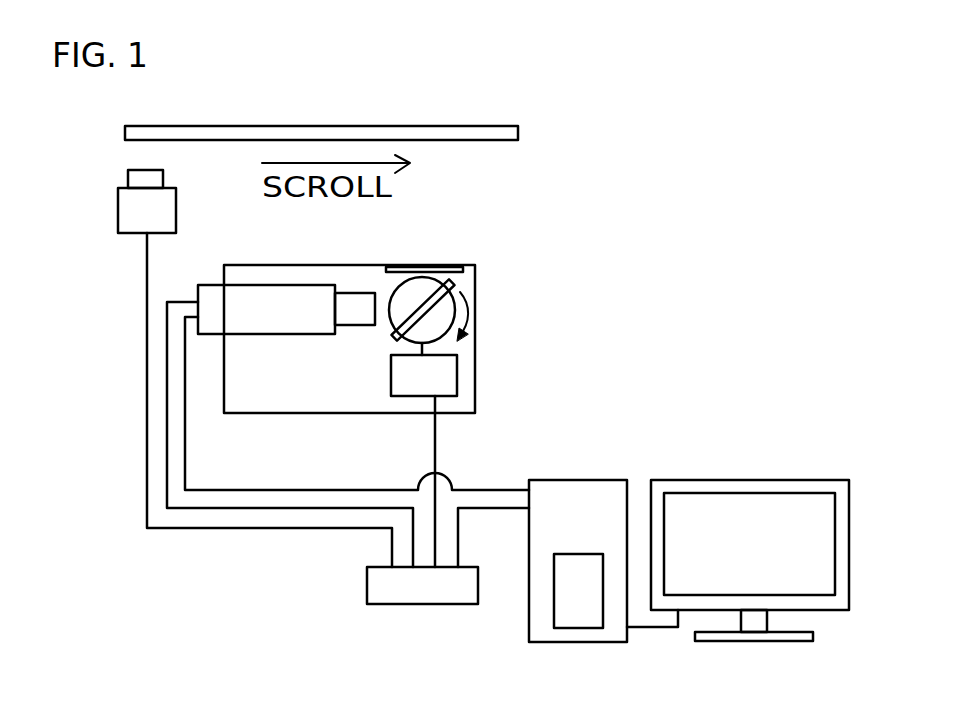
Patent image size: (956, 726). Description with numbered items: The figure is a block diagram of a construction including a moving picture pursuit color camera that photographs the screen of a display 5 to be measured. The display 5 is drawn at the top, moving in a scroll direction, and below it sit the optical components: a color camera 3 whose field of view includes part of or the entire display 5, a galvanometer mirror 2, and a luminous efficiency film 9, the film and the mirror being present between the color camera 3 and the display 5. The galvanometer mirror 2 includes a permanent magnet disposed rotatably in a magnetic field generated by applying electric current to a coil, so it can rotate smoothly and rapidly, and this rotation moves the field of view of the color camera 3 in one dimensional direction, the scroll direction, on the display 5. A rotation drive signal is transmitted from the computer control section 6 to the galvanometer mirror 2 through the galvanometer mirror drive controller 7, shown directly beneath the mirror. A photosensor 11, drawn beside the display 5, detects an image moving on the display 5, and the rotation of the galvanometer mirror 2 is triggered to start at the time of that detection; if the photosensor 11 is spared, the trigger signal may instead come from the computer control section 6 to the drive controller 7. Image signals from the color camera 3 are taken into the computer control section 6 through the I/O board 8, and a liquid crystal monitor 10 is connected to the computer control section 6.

The galvanometer mirror 2 is at (416, 300).
The color camera 3 is at (304, 334).
The display 5 is at (468, 125).
The computer control section 6 is at (554, 607).
The galvanometer mirror drive controller 7 is at (397, 397).
The I/O board 8 is at (470, 566).
The luminous efficiency film 9 is at (453, 265).
The liquid crystal monitor 10 is at (805, 480).
The photosensor 11 is at (118, 200).